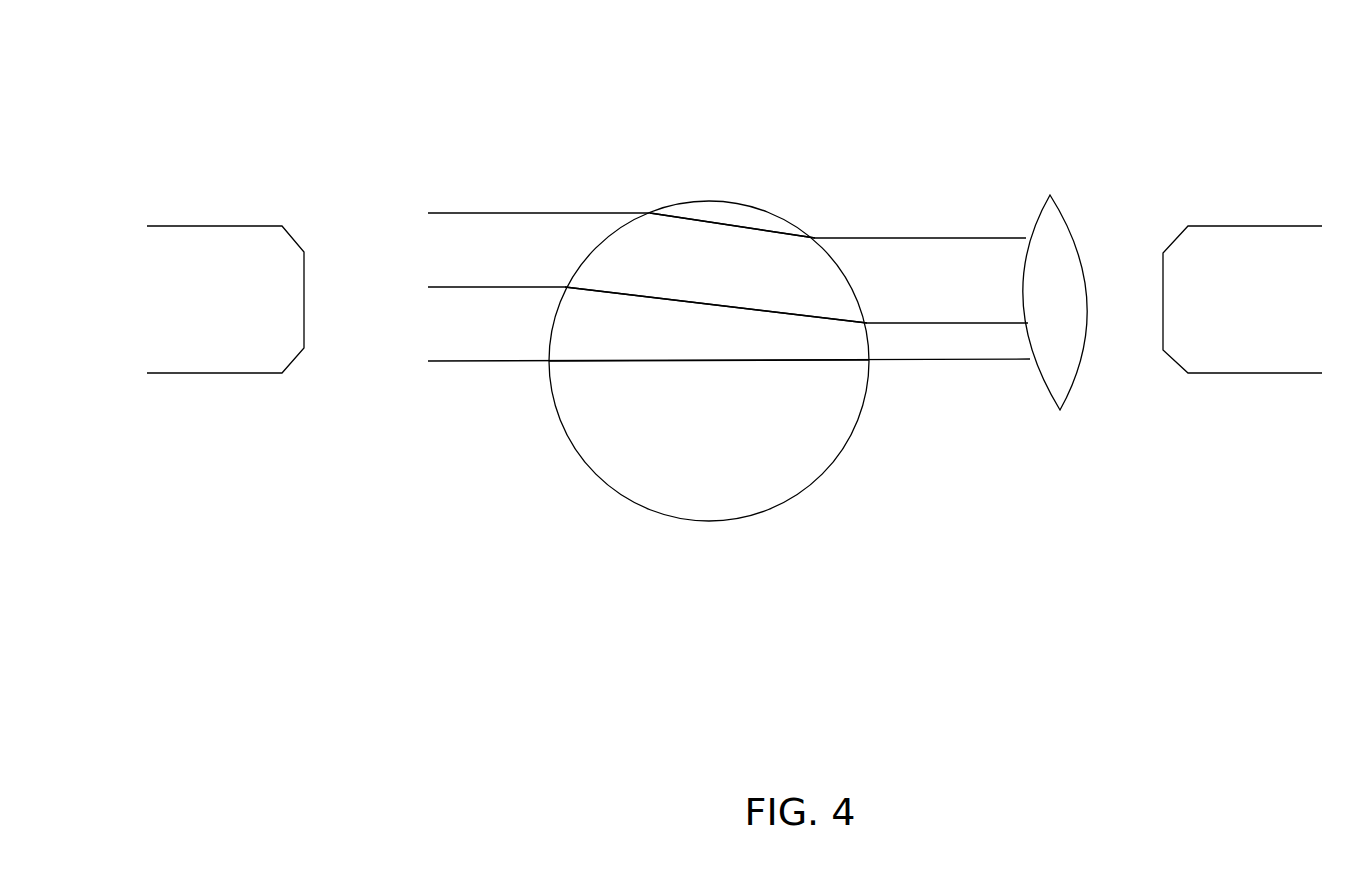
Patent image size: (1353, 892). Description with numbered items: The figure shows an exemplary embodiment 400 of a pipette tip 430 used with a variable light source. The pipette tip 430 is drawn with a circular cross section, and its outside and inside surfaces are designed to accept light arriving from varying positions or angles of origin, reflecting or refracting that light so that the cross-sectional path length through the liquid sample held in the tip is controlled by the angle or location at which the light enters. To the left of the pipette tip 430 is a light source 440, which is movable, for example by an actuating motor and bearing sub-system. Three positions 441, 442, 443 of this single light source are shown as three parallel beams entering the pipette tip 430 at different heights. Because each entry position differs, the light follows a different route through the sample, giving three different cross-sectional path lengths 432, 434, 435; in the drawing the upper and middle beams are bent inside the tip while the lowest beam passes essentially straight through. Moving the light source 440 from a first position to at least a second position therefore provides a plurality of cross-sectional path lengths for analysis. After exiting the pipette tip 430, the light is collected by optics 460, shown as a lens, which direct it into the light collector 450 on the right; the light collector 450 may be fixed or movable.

The exemplary embodiment 400 is at (583, 100).
The pipette tip 430 is at (590, 470).
The cross-sectional path length 432 is at (724, 223).
The cross-sectional path length 434 is at (724, 307).
The cross-sectional path length 435 is at (748, 362).
The light source 440 is at (195, 357).
The first position of light source 441 is at (525, 213).
The second position of light source 442 is at (436, 288).
The third position of light source 443 is at (465, 364).
The light collector 450 is at (1273, 358).
The optics 460 is at (1055, 233).